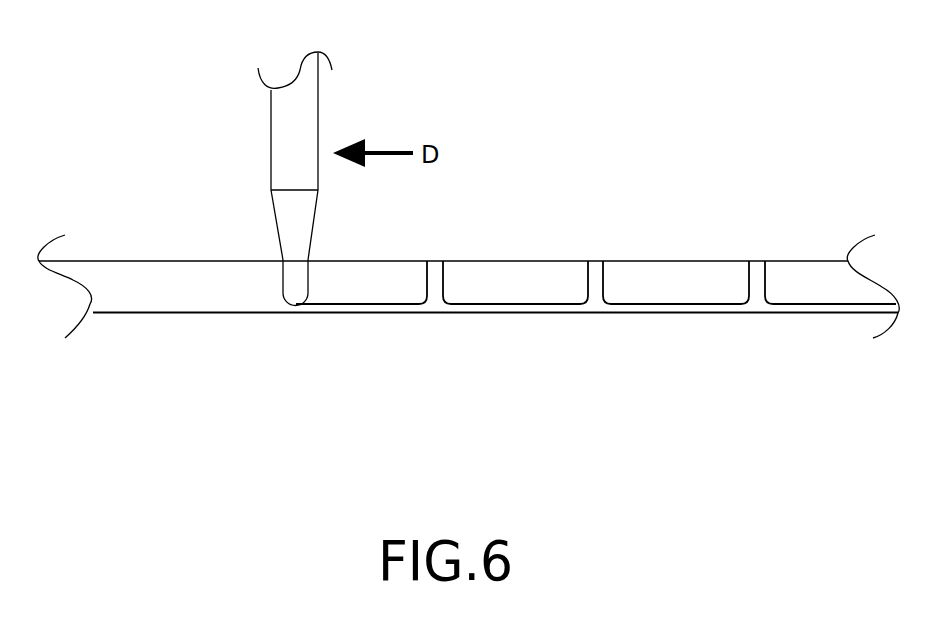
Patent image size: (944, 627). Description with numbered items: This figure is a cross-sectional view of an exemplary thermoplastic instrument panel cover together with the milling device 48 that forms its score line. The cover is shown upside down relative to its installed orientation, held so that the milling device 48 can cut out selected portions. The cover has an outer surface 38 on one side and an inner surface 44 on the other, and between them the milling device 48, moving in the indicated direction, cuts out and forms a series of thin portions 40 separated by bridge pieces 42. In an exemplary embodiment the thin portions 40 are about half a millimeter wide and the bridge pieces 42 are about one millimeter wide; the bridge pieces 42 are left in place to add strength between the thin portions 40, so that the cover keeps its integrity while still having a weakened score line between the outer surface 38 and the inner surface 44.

The outer surface 38 is at (145, 313).
The thin portions 40 is at (507, 312).
The bridge pieces 42 is at (433, 293).
The inner surface 44 is at (132, 261).
The milling device 48 is at (280, 116).